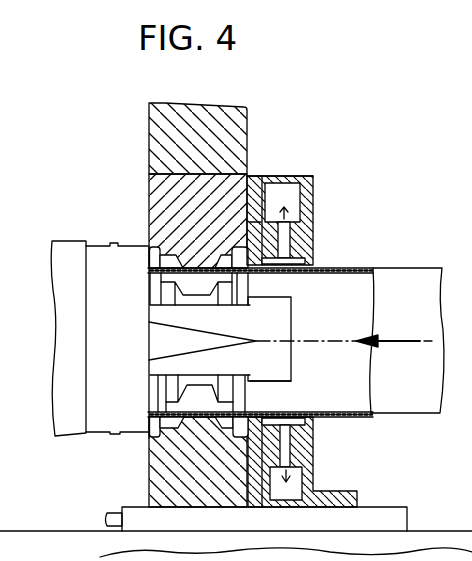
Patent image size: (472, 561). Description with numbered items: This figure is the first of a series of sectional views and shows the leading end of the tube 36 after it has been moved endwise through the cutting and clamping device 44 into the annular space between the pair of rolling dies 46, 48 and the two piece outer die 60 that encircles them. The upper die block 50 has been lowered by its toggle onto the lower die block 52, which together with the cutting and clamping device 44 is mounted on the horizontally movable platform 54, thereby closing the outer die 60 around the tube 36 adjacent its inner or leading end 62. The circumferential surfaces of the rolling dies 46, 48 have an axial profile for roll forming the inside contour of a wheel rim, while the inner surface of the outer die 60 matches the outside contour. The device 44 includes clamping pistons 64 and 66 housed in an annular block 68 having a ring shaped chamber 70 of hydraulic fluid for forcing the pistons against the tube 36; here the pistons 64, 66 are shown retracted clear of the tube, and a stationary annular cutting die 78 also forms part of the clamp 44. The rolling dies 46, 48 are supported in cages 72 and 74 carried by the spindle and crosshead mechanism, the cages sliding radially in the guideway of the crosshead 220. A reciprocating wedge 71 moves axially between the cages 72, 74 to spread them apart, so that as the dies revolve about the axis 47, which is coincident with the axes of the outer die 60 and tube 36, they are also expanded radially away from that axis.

The crosshead 220 is at (78, 214).
The die block 50 is at (157, 190).
The two piece outer die 60 is at (146, 215).
The rolling die 46 is at (153, 293).
The reciprocating wedge 71 is at (162, 336).
The rolling die 48 is at (158, 390).
The inner or leading end 62 is at (147, 420).
The die block 52 is at (171, 462).
The annular cutting die 78 is at (258, 200).
The annular block 68 is at (290, 176).
The ring shaped chamber 70 is at (299, 188).
The cutting and clamping device 44 is at (316, 192).
The clamping piston 64 is at (289, 243).
The tube 36 is at (377, 270).
The cage 72 is at (291, 300).
The axis 47 is at (347, 324).
The cage 74 is at (291, 372).
The clamping piston 66 is at (290, 447).
The platform 54 is at (378, 507).